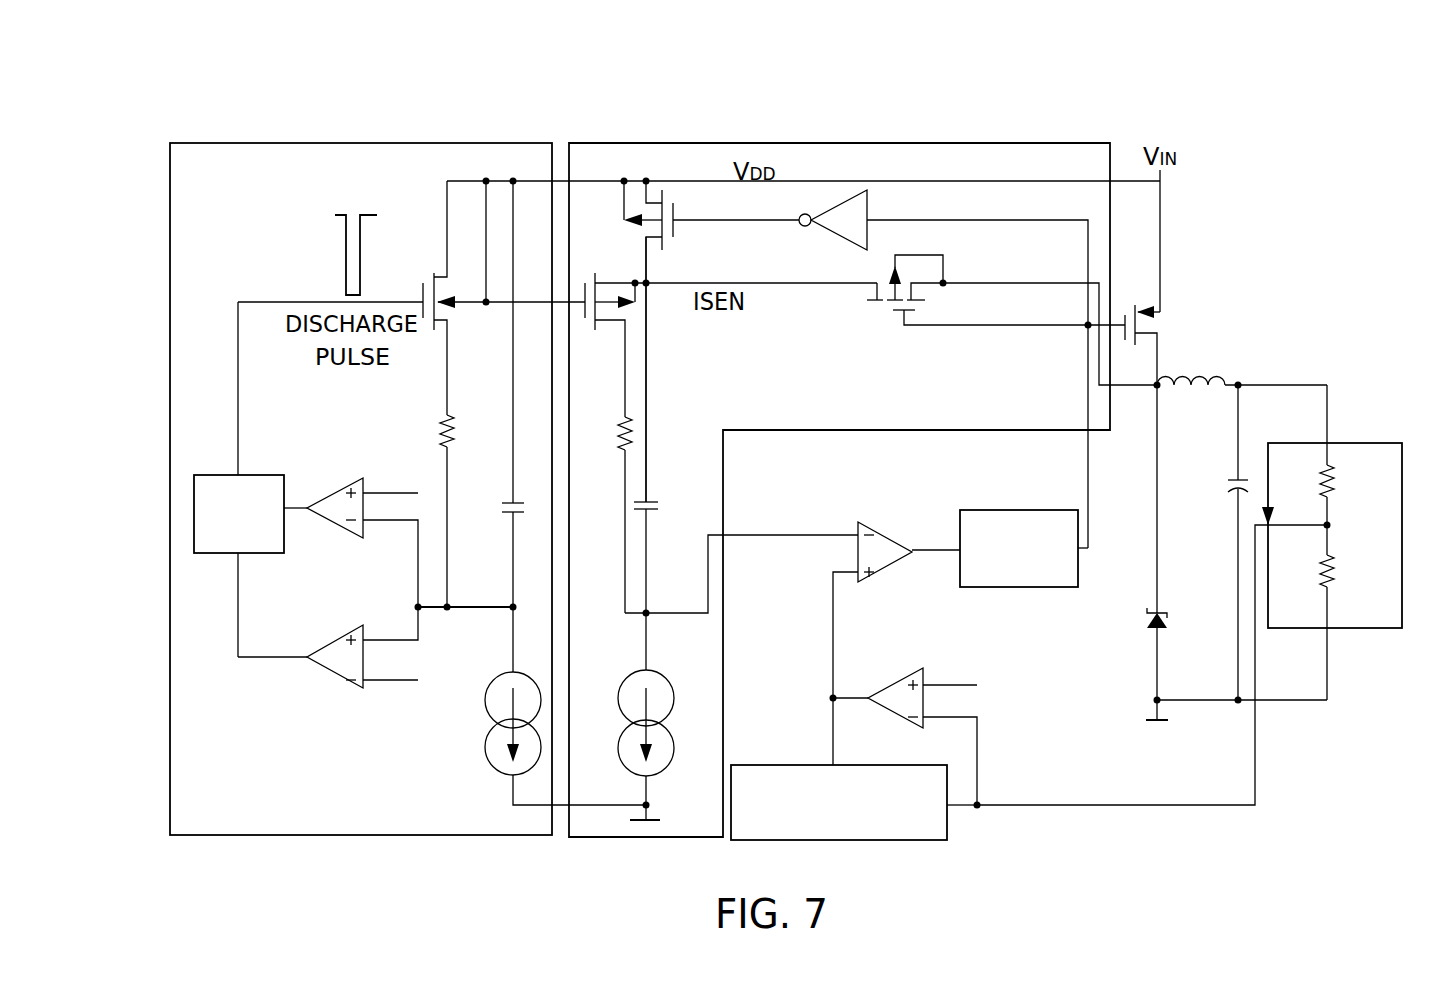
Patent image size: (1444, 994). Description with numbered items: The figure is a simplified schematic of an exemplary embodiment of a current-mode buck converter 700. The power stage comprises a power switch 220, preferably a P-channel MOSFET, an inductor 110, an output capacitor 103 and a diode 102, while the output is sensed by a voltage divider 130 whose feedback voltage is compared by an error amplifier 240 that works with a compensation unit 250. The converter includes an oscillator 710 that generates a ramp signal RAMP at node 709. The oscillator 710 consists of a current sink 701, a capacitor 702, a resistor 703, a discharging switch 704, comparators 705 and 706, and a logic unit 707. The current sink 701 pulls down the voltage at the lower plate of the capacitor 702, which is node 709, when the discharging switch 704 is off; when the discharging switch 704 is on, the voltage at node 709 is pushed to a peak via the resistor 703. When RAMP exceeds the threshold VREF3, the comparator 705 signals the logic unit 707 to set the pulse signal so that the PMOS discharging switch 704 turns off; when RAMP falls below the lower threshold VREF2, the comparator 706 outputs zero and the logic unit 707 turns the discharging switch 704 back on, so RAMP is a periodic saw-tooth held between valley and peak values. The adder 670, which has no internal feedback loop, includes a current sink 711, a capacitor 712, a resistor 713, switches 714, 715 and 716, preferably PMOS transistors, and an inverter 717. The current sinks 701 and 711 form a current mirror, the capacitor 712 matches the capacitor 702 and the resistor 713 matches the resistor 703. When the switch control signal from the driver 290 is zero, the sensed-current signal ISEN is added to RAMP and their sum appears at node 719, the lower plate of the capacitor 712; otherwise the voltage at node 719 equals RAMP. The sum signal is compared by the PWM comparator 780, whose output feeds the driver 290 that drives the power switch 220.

The buck converter 700 is at (303, 124).
The oscillator 710 is at (485, 143).
The adder 670 is at (993, 143).
The discharging switch 704 is at (422, 284).
The resistor 703 is at (446, 418).
The capacitor 702 is at (509, 511).
The logic unit 707 is at (250, 475).
The comparator 706 is at (354, 539).
The comparator 705 is at (335, 686).
The node 709 is at (511, 606).
The current sink 701 is at (502, 776).
The switch 714 is at (594, 282).
The switch 715 is at (675, 240).
The inverter 717 is at (857, 247).
The switch 716 is at (880, 306).
The resistor 713 is at (622, 416).
The capacitor 712 is at (652, 509).
The node 719 is at (648, 612).
The current sink 711 is at (657, 672).
The power switch 220 is at (1133, 306).
The inductor 110 is at (1216, 378).
The output capacitor 103 is at (1233, 478).
The diode 102 is at (1163, 632).
The voltage divider 130 is at (1360, 443).
The driver 290 is at (1030, 510).
The PWM comparator 780 is at (866, 580).
The error amplifier 240 is at (919, 729).
The compensation unit 250 is at (792, 764).